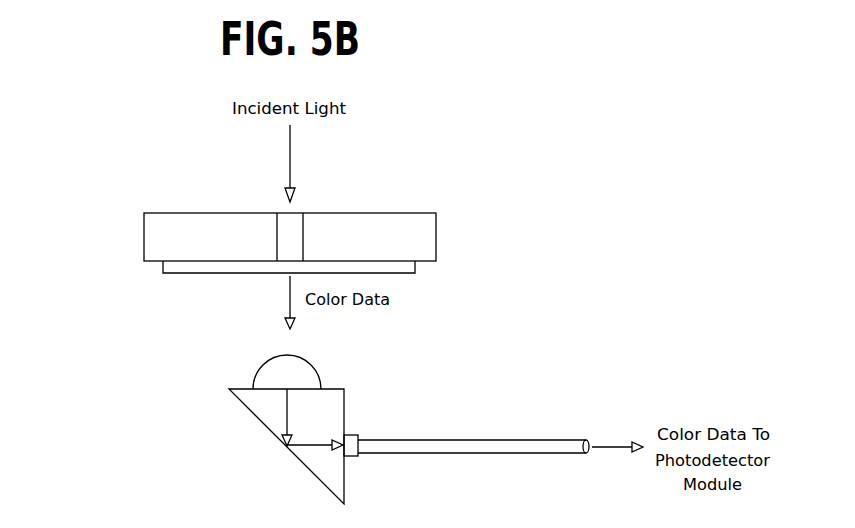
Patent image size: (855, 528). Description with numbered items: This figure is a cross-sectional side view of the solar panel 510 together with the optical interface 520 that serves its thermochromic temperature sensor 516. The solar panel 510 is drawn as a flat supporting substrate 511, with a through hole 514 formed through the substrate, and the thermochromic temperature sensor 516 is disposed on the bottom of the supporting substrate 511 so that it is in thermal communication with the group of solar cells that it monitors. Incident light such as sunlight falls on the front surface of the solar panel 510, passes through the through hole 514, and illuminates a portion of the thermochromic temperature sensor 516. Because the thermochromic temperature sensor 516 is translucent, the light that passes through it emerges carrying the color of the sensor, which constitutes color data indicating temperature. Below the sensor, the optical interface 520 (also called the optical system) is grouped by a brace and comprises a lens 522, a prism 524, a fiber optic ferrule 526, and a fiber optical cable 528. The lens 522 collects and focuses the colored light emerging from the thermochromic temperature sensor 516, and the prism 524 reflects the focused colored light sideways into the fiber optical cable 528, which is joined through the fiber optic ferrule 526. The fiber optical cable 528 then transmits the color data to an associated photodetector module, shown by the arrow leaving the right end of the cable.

The solar panel 510 is at (274, 230).
The supporting substrate 511 is at (437, 232).
The through hole 514 is at (284, 222).
The thermochromic temperature sensor 516 is at (415, 273).
The optical interface 520 is at (409, 410).
The lens 522 is at (310, 362).
The prism 524 is at (344, 398).
The fiber optic ferrule 526 is at (358, 433).
The fiber optical cable 528 is at (473, 430).